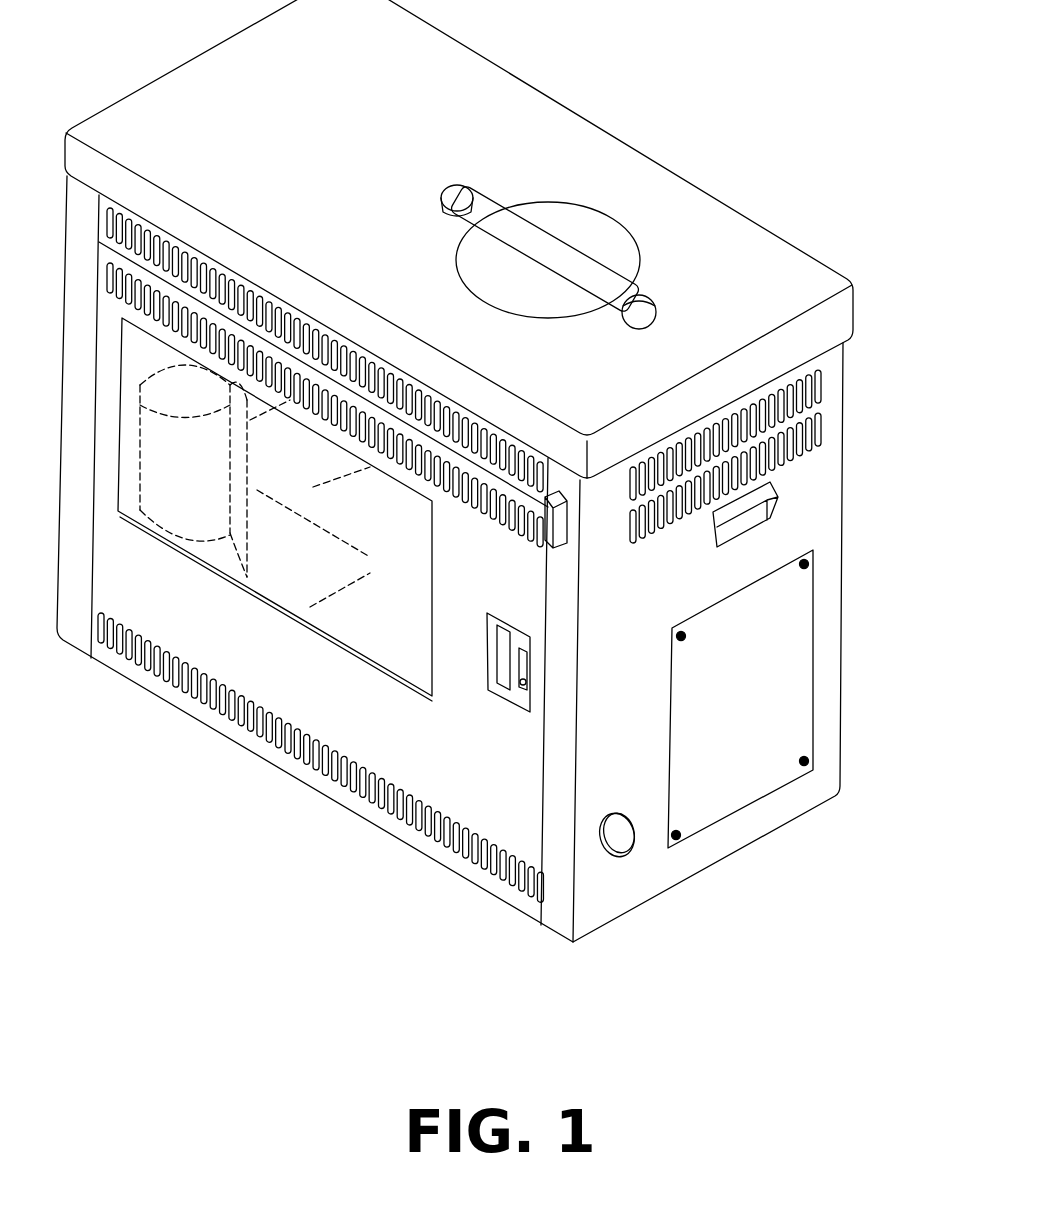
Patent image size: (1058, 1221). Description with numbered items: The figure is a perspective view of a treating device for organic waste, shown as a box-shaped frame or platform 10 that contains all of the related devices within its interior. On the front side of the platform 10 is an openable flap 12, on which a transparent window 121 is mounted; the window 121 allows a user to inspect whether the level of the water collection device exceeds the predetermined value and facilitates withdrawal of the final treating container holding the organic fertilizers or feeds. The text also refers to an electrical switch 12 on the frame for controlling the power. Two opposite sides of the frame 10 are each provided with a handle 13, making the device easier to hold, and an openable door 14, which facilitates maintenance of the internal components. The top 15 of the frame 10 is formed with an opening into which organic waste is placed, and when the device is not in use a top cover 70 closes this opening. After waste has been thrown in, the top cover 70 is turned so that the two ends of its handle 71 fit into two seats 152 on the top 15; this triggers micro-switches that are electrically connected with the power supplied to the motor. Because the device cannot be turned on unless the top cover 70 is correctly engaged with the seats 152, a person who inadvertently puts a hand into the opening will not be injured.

The platform 10 is at (345, 833).
The openable flap 12 is at (557, 548).
The transparent window 121 is at (291, 598).
The handle 13 is at (765, 522).
The openable door 14 is at (760, 773).
The top 15 is at (549, 113).
The seat 152 is at (645, 298).
The top cover 70 is at (595, 217).
The handle 71 is at (508, 227).